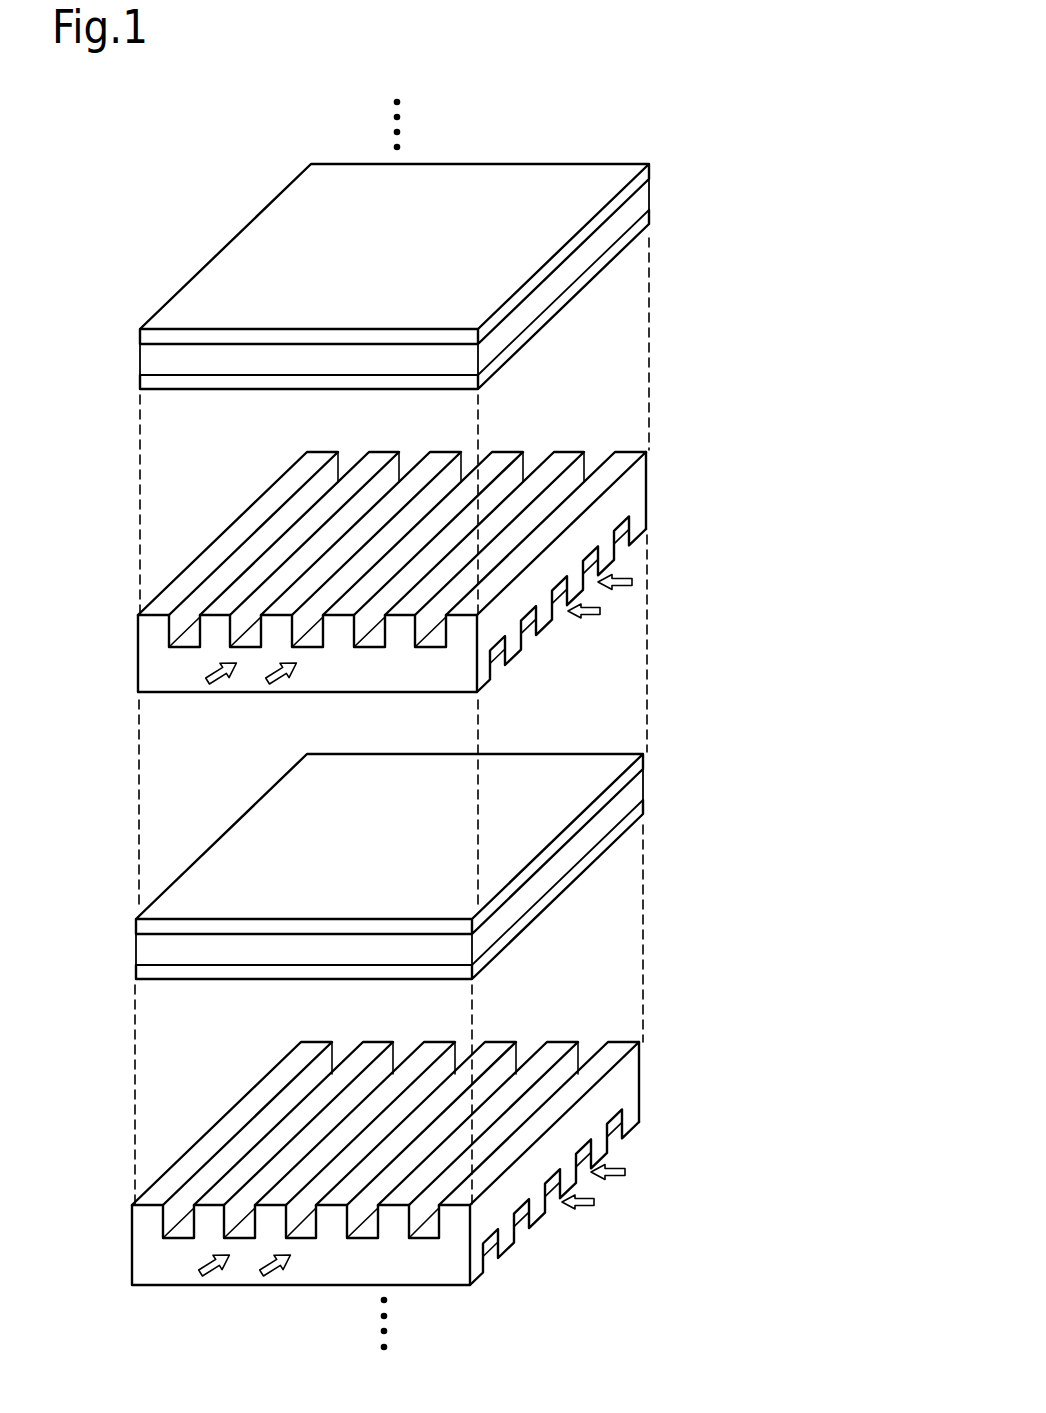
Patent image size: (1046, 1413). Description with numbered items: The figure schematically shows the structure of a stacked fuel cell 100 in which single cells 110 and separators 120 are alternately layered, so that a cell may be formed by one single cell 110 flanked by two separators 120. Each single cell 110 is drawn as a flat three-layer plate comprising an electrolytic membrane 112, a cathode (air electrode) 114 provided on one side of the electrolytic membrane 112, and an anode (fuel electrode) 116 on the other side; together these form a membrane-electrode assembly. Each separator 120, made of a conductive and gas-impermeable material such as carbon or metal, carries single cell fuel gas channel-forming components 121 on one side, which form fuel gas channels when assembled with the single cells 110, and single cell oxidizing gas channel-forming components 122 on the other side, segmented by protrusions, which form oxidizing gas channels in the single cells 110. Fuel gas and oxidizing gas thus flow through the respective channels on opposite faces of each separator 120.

The fuel cell 100 is at (165, 160).
The single cell 110 is at (462, 567).
The electrolytic membrane 112 is at (650, 197).
The cathode 114 is at (650, 177).
The anode 116 is at (650, 217).
The separator 120 is at (437, 885).
The single cell fuel gas channel-forming component 121 is at (561, 598).
The single cell oxidizing gas channel-forming component 122 is at (295, 563).